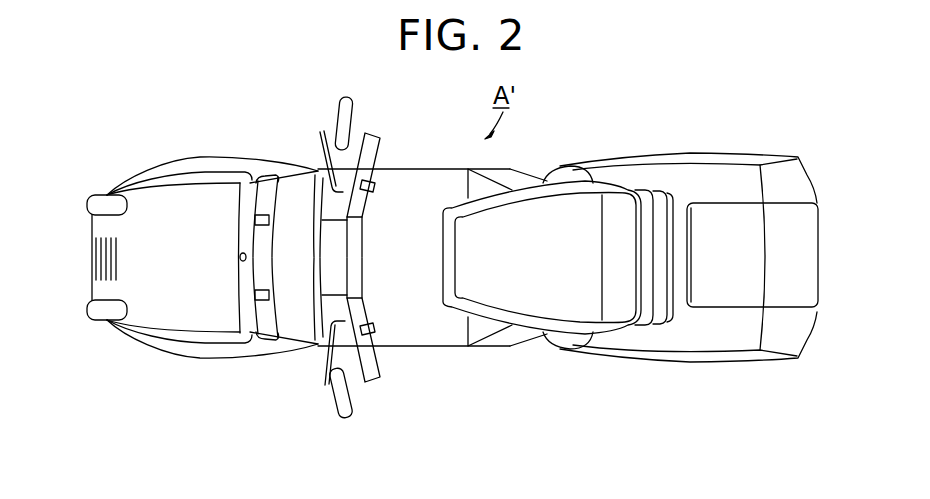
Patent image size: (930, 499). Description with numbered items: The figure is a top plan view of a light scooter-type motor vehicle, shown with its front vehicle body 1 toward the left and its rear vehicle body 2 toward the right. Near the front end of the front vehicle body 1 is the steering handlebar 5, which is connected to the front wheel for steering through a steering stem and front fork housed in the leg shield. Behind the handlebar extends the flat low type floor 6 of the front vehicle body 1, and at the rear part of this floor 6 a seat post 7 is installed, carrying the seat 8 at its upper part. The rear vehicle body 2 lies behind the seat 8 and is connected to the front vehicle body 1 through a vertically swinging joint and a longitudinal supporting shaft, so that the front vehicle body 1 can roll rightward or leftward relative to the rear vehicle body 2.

The front vehicle body 1 is at (428, 351).
The rear vehicle body 2 is at (735, 153).
The steering handlebar 5 is at (382, 138).
The flat low type floor 6 is at (430, 180).
The seat post 7 is at (515, 335).
The seat 8 is at (573, 330).